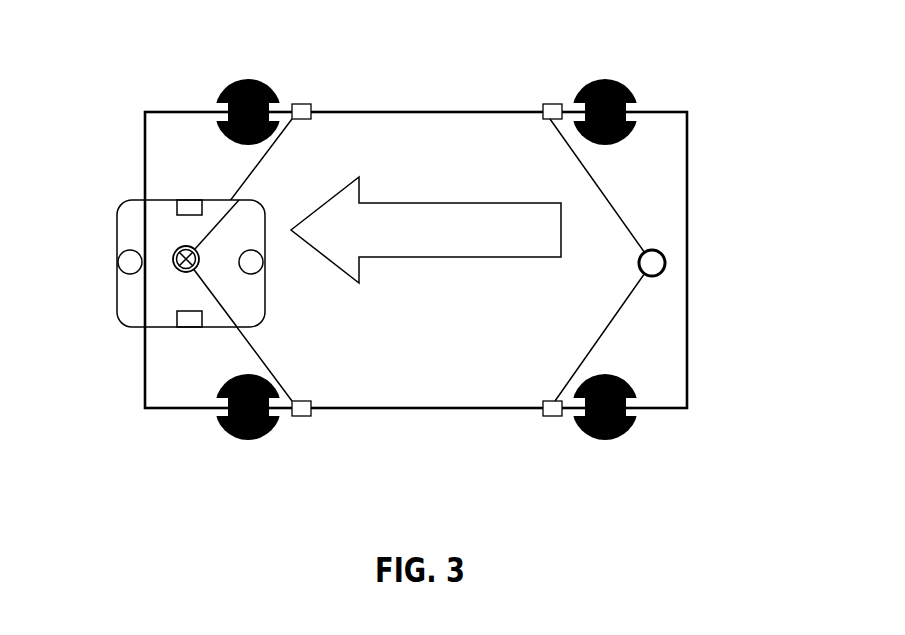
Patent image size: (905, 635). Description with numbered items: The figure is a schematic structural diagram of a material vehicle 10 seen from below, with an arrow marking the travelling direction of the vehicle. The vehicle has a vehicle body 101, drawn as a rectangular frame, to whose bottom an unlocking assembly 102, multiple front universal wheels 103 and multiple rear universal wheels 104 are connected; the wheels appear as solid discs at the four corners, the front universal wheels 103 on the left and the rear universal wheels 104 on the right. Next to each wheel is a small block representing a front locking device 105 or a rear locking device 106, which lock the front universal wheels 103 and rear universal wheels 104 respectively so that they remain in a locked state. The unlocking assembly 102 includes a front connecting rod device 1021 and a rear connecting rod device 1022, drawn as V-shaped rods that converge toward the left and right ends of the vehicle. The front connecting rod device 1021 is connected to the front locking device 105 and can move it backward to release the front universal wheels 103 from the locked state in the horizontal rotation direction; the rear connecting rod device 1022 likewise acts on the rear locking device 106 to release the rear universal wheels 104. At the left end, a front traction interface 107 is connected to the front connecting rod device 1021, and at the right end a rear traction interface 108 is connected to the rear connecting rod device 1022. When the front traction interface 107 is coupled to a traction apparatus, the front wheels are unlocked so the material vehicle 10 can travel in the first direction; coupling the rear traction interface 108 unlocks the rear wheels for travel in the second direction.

The material vehicle 10 is at (450, 108).
The vehicle body 101 is at (418, 412).
The unlocking assembly 102 is at (418, 260).
The front connecting rod device 1021 is at (248, 347).
The rear connecting rod device 1022 is at (617, 333).
The front universal wheels 103 is at (228, 80).
The rear universal wheels 104 is at (632, 80).
The front locking device 105 is at (299, 104).
The rear locking device 106 is at (553, 103).
The front traction interface 107 is at (168, 255).
The rear traction interface 108 is at (665, 258).